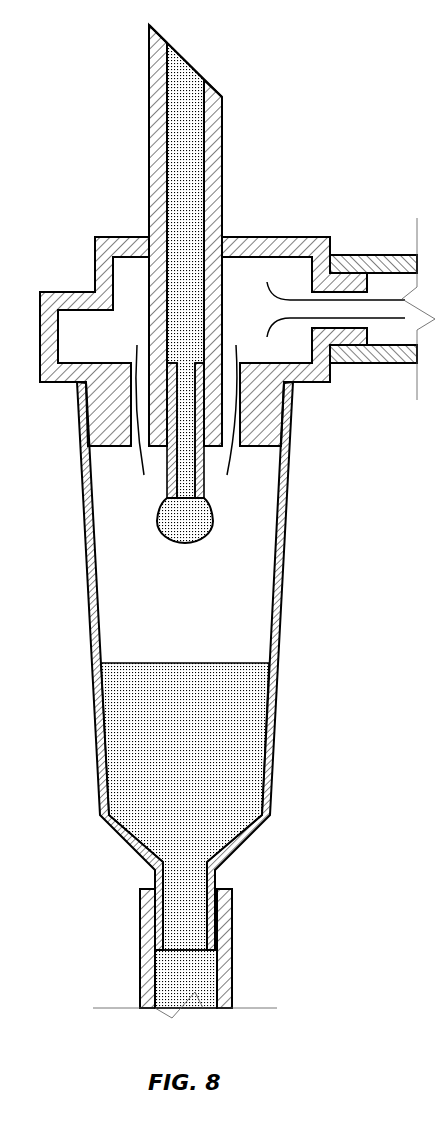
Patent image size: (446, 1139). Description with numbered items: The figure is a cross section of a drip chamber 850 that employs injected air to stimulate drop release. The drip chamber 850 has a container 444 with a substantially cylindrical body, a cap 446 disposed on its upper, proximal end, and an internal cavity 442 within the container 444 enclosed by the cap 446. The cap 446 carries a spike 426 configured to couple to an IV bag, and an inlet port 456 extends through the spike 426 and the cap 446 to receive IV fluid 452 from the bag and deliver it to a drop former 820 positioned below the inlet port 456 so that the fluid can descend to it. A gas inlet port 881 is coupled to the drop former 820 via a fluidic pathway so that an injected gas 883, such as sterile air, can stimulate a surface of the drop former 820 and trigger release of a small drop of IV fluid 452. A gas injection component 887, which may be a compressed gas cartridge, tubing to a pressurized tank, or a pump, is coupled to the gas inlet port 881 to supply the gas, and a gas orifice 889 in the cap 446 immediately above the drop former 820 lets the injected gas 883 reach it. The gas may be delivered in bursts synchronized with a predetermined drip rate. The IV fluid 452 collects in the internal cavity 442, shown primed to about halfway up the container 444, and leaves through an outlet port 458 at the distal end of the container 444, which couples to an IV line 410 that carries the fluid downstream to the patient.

The IV line 410 is at (232, 980).
The spike 426 is at (224, 128).
The internal cavity 442 is at (217, 617).
The container 444 is at (275, 746).
The cap 446 is at (95, 262).
The IV fluid 452 is at (165, 540).
The inlet port 456 is at (203, 44).
The outlet port 458 is at (176, 961).
The drop former 820 is at (240, 491).
The drip chamber 850 is at (132, 145).
The gas inlet port 881 is at (350, 273).
The injected gas 883 is at (293, 300).
The gas injection component 887 is at (380, 257).
The gas orifice 889 is at (243, 410).